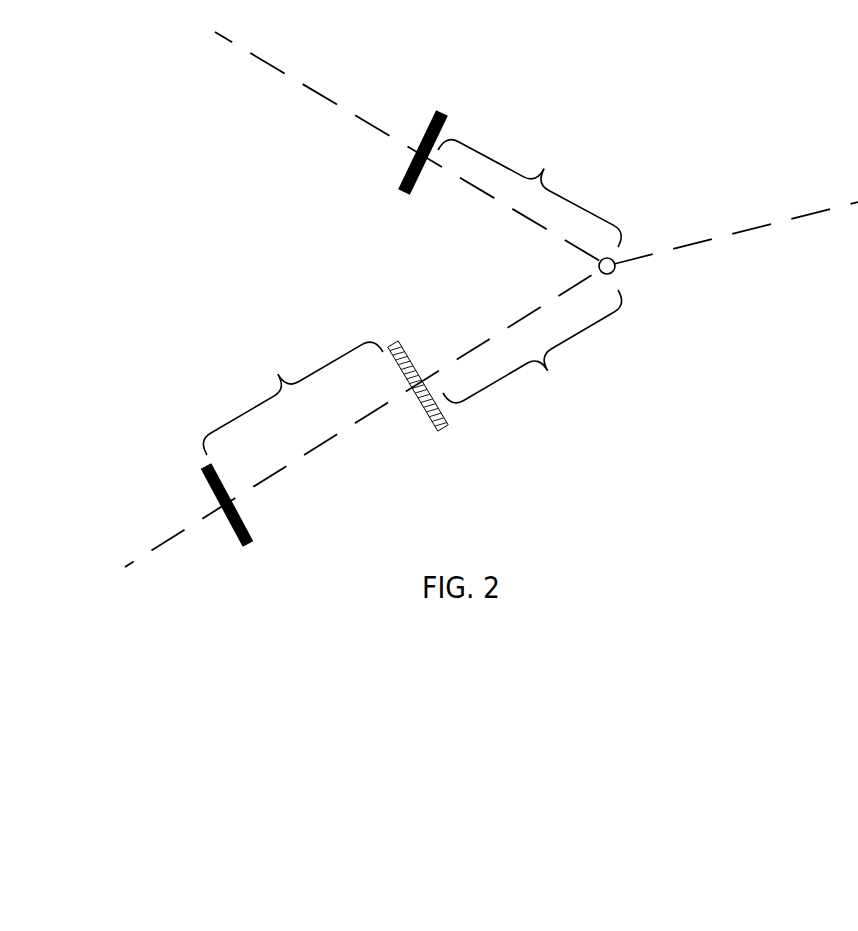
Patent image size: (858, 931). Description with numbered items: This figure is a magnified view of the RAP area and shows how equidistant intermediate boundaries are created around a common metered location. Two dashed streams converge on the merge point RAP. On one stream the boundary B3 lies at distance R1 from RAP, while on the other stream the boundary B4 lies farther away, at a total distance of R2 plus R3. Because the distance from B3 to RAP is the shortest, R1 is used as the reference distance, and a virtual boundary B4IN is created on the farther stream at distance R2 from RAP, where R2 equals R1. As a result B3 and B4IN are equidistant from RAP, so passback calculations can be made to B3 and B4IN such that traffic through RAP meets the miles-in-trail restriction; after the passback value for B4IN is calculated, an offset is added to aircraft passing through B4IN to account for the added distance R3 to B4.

The boundary B3 is at (424, 132).
The boundary B4 is at (205, 496).
The virtual boundary B4IN is at (425, 412).
The element RAP is at (636, 275).
The distance R1 is at (529, 188).
The distance R2 is at (532, 348).
The distance R3 is at (293, 393).